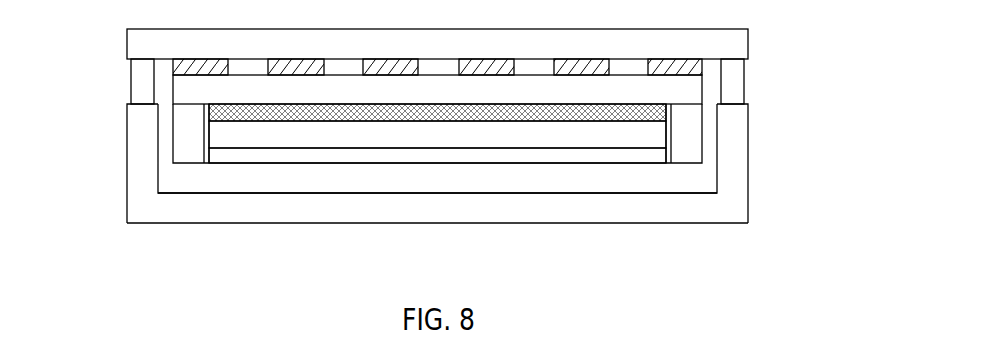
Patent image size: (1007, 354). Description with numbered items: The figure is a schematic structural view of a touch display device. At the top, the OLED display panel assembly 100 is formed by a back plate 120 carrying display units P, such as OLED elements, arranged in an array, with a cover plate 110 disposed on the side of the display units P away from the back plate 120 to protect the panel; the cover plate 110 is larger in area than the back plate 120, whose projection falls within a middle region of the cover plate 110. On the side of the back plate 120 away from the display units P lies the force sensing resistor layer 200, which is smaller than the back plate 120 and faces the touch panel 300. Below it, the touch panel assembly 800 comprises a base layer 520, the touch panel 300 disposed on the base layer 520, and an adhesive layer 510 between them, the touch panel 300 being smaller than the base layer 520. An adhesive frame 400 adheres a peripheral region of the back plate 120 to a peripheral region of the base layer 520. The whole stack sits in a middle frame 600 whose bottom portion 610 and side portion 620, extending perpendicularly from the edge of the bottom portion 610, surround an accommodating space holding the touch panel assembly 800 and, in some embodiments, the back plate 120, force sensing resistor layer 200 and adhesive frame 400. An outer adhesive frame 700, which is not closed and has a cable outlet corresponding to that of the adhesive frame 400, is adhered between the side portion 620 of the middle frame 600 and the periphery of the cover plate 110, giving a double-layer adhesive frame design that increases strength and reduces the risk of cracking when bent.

The OLED display panel assembly 100 is at (522, 71).
The cover plate 110 is at (741, 36).
The display units P is at (705, 65).
The back plate 120 is at (679, 89).
The force sensing resistor layer 200 is at (668, 111).
The touch panel 300 is at (667, 133).
The adhesive frame 400 is at (702, 132).
The adhesive layer 510 is at (667, 157).
The base layer 520 is at (704, 177).
The touch panel assembly 800 is at (533, 157).
The middle frame 600 is at (412, 194).
The bottom portion 610 is at (231, 223).
The side portion 620 is at (143, 148).
The outer adhesive frame 700 is at (143, 82).